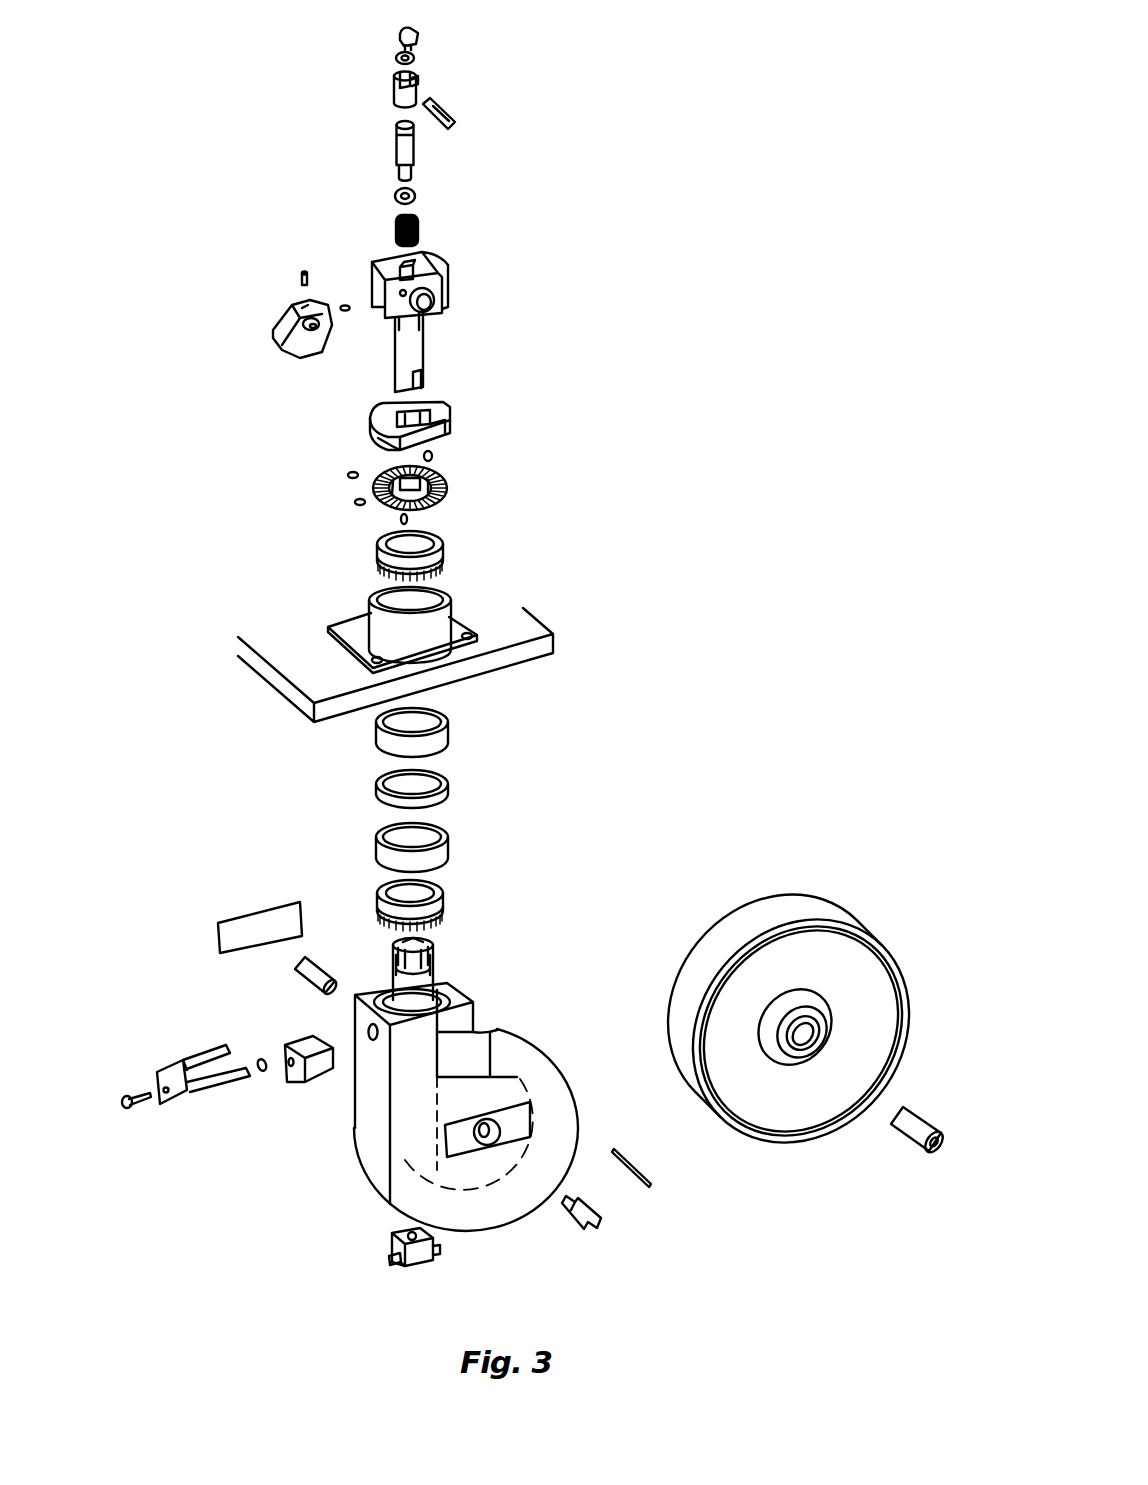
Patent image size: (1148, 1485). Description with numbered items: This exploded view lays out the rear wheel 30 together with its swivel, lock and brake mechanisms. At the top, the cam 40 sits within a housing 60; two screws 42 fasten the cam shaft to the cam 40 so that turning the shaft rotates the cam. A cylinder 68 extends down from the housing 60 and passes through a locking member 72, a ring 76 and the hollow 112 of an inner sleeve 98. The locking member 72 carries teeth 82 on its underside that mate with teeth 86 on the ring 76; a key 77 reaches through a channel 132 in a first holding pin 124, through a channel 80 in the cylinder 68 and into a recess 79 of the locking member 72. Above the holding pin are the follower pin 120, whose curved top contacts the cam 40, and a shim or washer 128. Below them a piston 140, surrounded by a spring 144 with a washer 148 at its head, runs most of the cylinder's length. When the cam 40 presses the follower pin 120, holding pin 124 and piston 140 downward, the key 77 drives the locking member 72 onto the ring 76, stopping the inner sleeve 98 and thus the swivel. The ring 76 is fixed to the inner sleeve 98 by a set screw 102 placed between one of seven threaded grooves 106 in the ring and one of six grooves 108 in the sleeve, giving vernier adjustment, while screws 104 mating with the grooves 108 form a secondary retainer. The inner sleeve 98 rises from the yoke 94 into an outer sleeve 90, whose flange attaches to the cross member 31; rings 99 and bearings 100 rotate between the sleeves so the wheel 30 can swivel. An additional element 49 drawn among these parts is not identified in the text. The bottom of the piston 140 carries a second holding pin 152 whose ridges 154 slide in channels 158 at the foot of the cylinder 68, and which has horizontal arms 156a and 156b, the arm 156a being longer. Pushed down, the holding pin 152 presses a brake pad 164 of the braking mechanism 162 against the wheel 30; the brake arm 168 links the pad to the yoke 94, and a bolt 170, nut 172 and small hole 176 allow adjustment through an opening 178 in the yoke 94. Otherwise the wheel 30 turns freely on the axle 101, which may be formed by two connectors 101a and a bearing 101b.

The rear wheel 30 is at (845, 910).
The cross member 31 is at (556, 646).
The cam 40 is at (305, 355).
The screws 42 is at (343, 306).
The seal ring 49 is at (378, 787).
The housing 60 is at (457, 275).
The cylinder 68 is at (472, 352).
The locking member 72 is at (423, 413).
The ring 76 is at (452, 490).
The key 77 is at (456, 118).
The recess 79 is at (445, 432).
The channel 80 is at (436, 303).
The teeth 82 is at (385, 436).
The teeth 86 is at (451, 490).
The outer sleeve 90 is at (455, 600).
The yoke 94 is at (454, 1106).
The inner sleeve 98 is at (469, 954).
The rings 99 is at (450, 842).
The bearings 100 is at (450, 554).
The axle 101 is at (295, 968).
The connectors 101a is at (600, 1222).
The bearing 101b is at (905, 1135).
The set screw 102 is at (435, 455).
The screws 104 is at (400, 520).
The threaded grooves 106 is at (395, 467).
The grooves 108 is at (397, 972).
The hollow 112 is at (430, 940).
The follower pin 120 is at (400, 35).
The first holding pin 124 is at (395, 98).
The shim or washer 128 is at (418, 58).
The channel 132 is at (420, 84).
The piston 140 is at (397, 150).
The spring 144 is at (416, 220).
The washer 148 is at (414, 194).
The second holding pin 152 is at (413, 1270).
The ridges 154 is at (420, 1265).
The arm 156a is at (392, 1262).
The arm 156b is at (437, 1249).
The channels 158 is at (425, 375).
The braking mechanism 162 is at (206, 1088).
The brake pad 164 is at (278, 1088).
The brake arm 168 is at (185, 1105).
The bolt 170 is at (130, 1110).
The nut 172 is at (262, 1075).
The hole 176 is at (292, 1080).
The opening 178 is at (365, 1040).